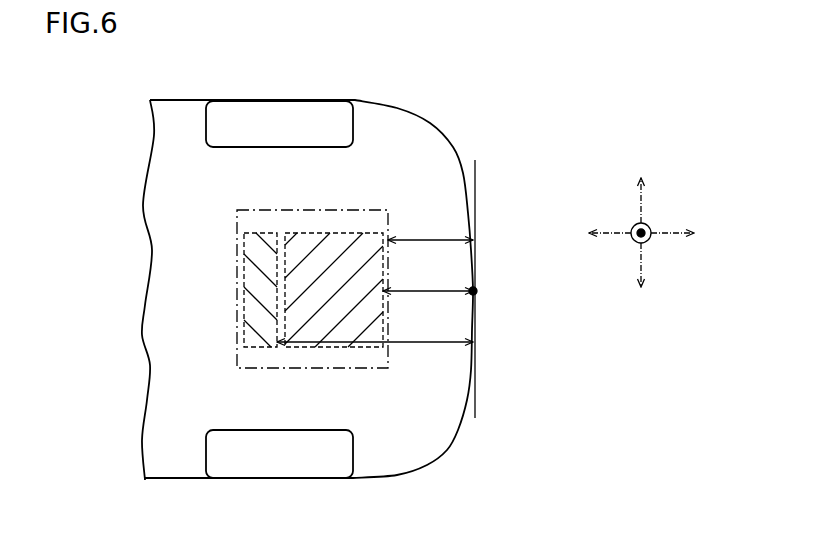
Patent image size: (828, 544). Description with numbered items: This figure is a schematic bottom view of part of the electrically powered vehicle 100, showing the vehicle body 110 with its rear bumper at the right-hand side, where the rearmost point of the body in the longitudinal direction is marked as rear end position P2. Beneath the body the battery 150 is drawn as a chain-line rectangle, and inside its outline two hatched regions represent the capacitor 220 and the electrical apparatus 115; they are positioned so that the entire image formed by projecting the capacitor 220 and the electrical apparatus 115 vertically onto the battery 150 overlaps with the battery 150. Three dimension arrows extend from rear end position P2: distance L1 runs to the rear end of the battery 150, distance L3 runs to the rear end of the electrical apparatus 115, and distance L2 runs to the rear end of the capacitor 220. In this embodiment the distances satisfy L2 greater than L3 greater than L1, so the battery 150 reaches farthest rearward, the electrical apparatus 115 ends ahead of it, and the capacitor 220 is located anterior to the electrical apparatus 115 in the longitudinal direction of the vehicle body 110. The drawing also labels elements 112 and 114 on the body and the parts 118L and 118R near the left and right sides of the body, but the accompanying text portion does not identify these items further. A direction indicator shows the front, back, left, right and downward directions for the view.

The electrically powered vehicle 100 is at (185, 85).
The vehicle body 110 is at (140, 204).
The recess 112 is at (192, 297).
The wall surface 114 is at (175, 250).
The electrical apparatus 115 is at (333, 347).
The left leg portion 118L is at (280, 123).
The right leg portion 118R is at (263, 457).
The battery 150 is at (237, 318).
The capacitor 220 is at (263, 347).
The distance L1 is at (430, 236).
The distance L2 is at (430, 340).
The distance L3 is at (430, 288).
The rear end position P2 is at (476, 294).